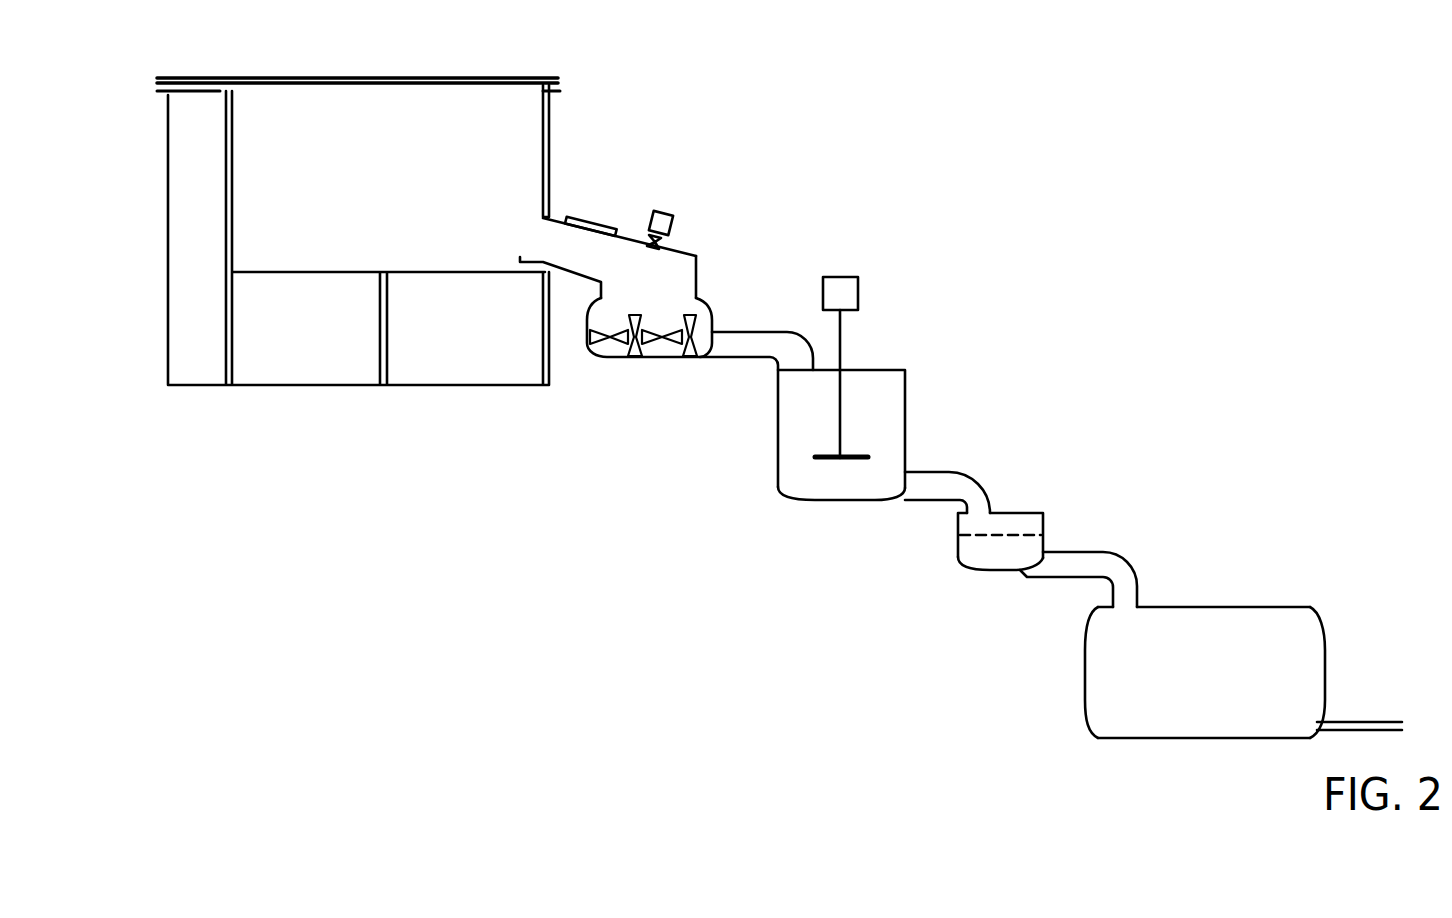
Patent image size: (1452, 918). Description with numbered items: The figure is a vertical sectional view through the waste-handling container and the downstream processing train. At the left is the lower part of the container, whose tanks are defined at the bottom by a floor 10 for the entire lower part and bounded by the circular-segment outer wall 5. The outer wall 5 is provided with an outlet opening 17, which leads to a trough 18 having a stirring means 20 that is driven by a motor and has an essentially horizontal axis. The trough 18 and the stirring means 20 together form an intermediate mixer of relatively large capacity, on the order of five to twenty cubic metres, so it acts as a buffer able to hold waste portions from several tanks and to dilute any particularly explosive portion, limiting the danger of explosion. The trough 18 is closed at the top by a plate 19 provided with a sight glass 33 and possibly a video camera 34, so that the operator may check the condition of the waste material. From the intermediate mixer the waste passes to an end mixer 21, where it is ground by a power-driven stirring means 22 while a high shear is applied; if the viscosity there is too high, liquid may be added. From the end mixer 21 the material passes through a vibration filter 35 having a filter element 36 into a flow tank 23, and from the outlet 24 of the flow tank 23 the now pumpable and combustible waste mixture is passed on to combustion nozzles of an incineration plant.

The outer wall 5 is at (543, 162).
The floor 10 is at (360, 387).
The outlet opening 17 is at (545, 242).
The trough 18 is at (609, 347).
The plate 19 is at (680, 262).
The stirring means 20 is at (637, 315).
The end mixer 21 is at (907, 423).
The power-driven stirring means 22 is at (840, 348).
The flow tank 23 is at (1220, 607).
The outlet 24 is at (1370, 720).
The sight glass 33 is at (587, 223).
The video camera 34 is at (652, 212).
The vibration filter 35 is at (963, 567).
The filter element 36 is at (1023, 530).